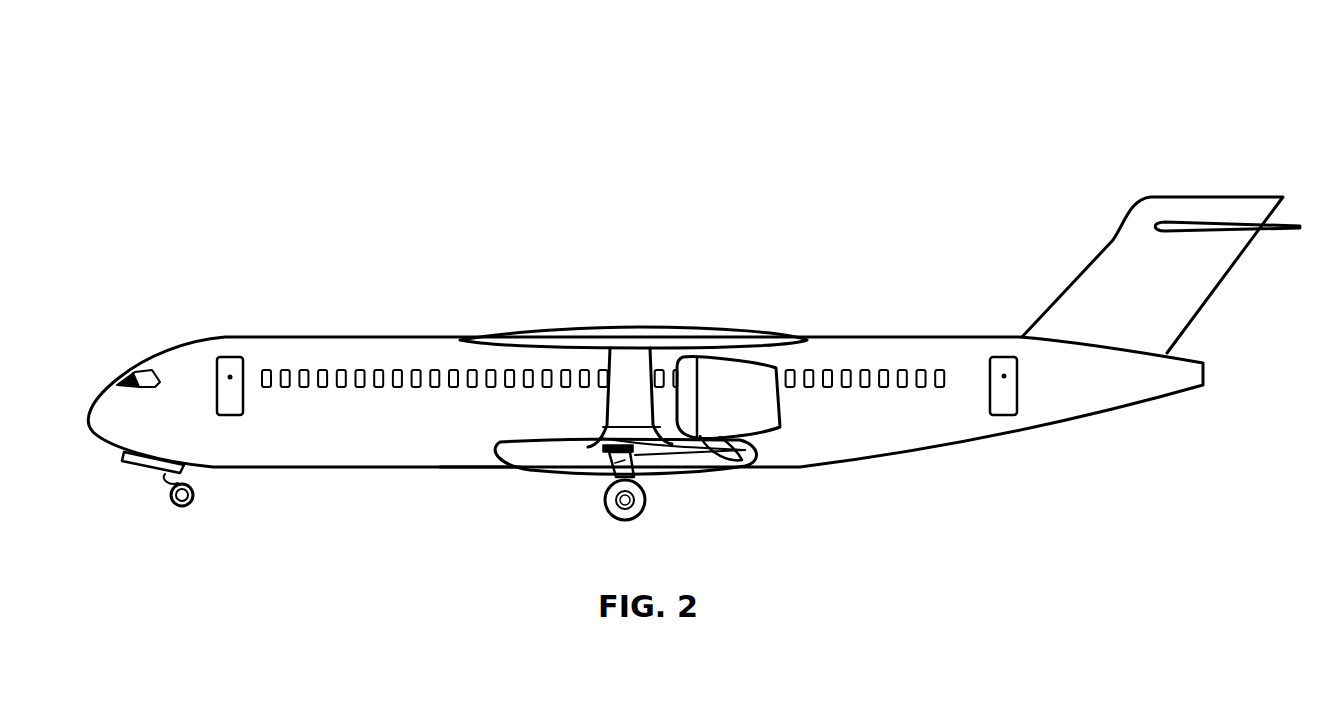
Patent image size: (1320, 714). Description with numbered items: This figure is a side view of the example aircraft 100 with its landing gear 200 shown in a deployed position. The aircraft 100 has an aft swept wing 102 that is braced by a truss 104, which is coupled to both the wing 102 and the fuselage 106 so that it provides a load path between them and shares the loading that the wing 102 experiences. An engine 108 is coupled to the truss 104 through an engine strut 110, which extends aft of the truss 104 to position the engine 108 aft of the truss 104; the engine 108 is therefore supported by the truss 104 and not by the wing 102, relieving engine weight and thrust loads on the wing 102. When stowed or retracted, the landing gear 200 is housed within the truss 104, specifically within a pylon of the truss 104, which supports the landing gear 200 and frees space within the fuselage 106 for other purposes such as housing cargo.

The aircraft 100 is at (995, 92).
The wing 102 is at (552, 333).
The truss 104 is at (607, 410).
The fuselage 106 is at (510, 402).
The engine 108 is at (762, 418).
The engine strut 110 is at (727, 450).
The landing gear 200 is at (602, 473).